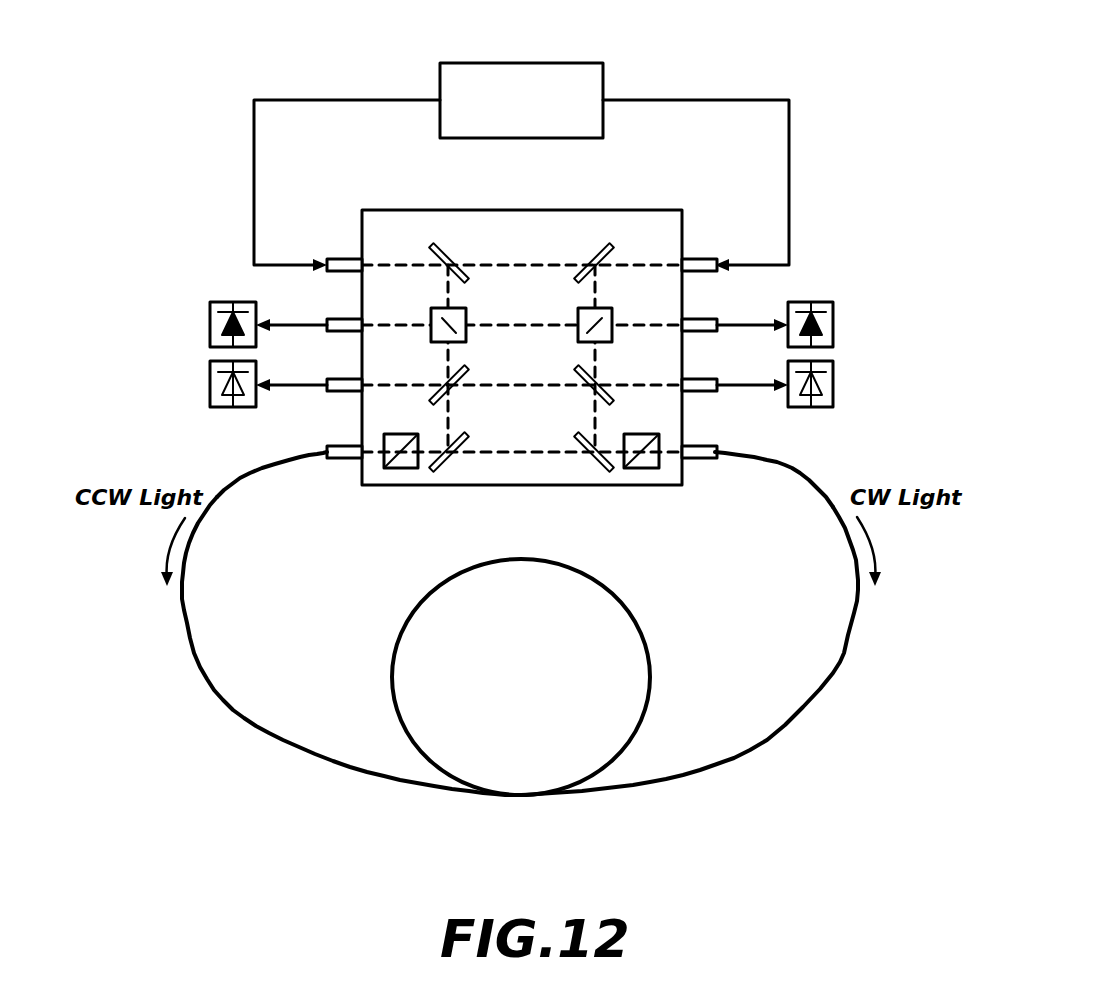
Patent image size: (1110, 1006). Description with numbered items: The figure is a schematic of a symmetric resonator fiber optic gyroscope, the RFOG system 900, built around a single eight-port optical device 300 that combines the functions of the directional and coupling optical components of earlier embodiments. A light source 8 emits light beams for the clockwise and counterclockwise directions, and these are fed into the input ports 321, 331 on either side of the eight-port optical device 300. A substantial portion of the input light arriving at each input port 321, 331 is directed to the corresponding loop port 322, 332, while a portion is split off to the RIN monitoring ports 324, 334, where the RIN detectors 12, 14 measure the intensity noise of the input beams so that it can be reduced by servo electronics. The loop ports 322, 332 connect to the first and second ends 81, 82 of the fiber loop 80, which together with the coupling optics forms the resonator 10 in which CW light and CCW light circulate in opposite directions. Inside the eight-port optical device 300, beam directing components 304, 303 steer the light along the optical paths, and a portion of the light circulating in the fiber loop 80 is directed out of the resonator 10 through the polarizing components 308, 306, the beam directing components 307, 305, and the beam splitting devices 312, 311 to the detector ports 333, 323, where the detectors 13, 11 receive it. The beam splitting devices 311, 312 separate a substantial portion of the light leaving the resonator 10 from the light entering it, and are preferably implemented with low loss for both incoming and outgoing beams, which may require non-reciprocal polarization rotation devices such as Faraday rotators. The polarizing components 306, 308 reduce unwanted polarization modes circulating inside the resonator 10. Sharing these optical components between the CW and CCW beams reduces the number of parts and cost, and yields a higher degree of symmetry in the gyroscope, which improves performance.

The RFOG system 900 is at (830, 64).
The light source 8 is at (603, 80).
The eight-port optical device 300 is at (522, 210).
The input port 331 is at (342, 258).
The detector port 333 is at (342, 318).
The RIN monitoring port 334 is at (342, 378).
The loop port 332 is at (340, 460).
The input port 321 is at (702, 258).
The detector port 323 is at (702, 318).
The RIN monitoring port 324 is at (702, 378).
The loop port 322 is at (704, 460).
The beam directing component 304 is at (440, 252).
The beam directing component 303 is at (600, 252).
The beam splitting device 312 is at (466, 328).
The beam splitting device 311 is at (578, 330).
The beam directing component 307 is at (443, 472).
The beam directing component 305 is at (600, 472).
The polarizing component 308 is at (400, 470).
The polarizing component 306 is at (643, 470).
The detector 13 is at (210, 316).
The RIN detector 14 is at (210, 376).
The detector 11 is at (833, 316).
The RIN detector 12 is at (833, 376).
The second end 82 is at (252, 468).
The first end 81 is at (790, 467).
The fiber loop 80 is at (625, 612).
The resonator 10 is at (724, 808).